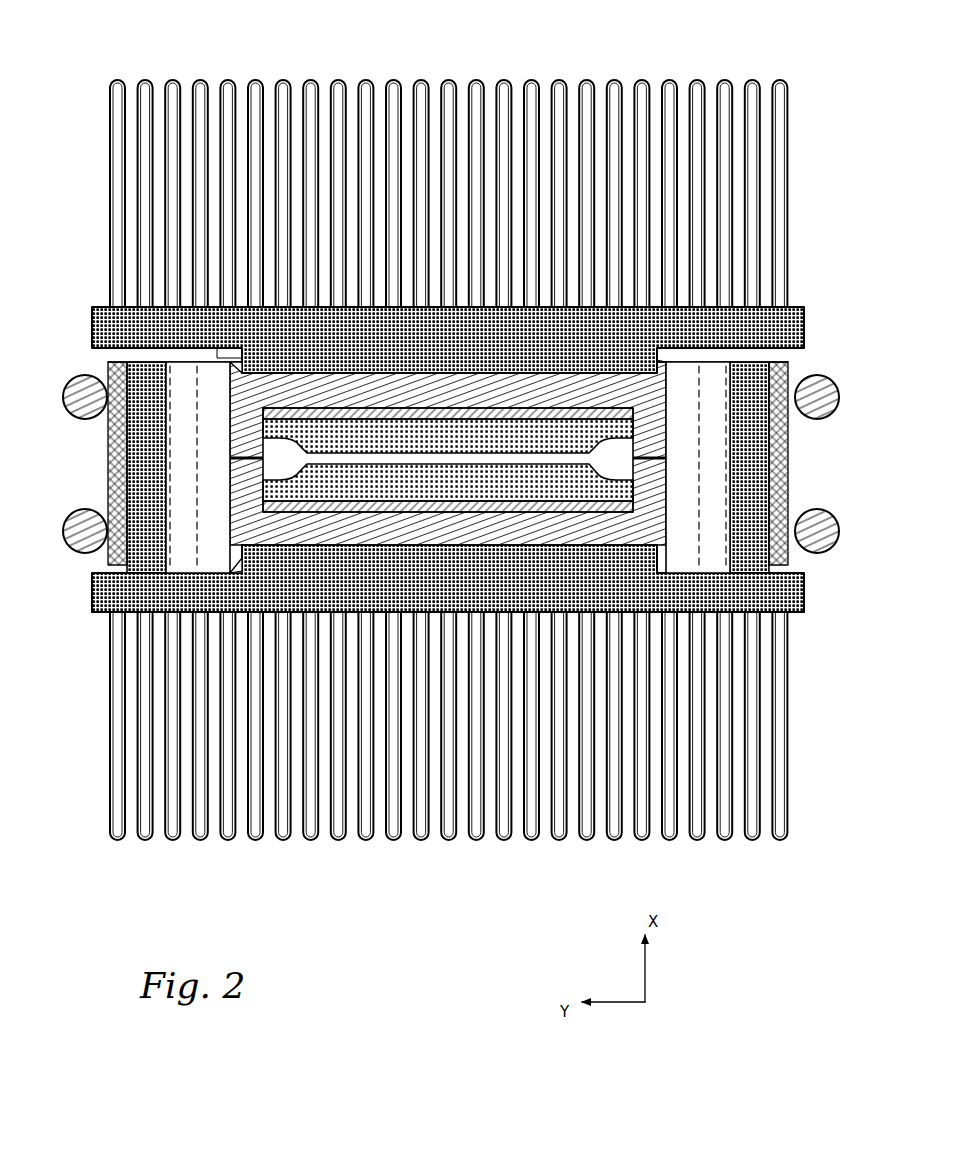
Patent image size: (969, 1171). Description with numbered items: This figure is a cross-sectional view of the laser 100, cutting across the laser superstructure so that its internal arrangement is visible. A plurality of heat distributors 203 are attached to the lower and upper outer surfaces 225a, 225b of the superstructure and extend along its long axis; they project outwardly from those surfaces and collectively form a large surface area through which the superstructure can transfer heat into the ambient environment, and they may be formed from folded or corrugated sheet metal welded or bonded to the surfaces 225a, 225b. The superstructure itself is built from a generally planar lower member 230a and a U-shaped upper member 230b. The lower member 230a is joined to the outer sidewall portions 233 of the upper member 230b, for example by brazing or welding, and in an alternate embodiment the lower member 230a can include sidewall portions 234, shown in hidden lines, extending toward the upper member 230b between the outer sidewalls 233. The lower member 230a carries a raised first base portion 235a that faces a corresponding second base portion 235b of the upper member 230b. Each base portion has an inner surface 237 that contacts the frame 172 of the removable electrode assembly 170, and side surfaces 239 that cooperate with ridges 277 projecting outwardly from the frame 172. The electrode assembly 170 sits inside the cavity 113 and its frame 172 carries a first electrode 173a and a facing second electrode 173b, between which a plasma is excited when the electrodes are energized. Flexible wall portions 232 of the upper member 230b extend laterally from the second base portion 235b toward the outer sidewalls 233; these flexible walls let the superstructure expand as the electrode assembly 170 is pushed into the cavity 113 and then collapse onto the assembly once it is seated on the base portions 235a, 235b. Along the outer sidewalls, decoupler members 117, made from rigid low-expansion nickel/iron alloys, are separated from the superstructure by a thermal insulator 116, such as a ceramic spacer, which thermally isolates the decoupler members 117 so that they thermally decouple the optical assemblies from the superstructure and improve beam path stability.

The laser 100 is at (200, 48).
The heat distributors 203 is at (345, 80).
The upper outer surface 225b is at (93, 307).
The lower outer surface 225a is at (795, 612).
The sidewall portions 234 is at (110, 618).
The thermal insulator 116 is at (120, 372).
The outer sidewall portions 233 is at (760, 440).
The upper member 230b is at (400, 385).
The lower member 230a is at (740, 585).
The inner surface 237 is at (440, 375).
The second base portion 235b is at (300, 375).
The first base portion 235a is at (300, 550).
The cavity 113 is at (687, 554).
The flexible wall portions 232 is at (217, 358).
The side surfaces 239 is at (245, 365).
The ridges 277 is at (650, 360).
The decoupler members 117 is at (105, 402).
The electrode assembly 170 is at (455, 540).
The frame 172 is at (495, 525).
The second electrode 173b is at (580, 440).
The first electrode 173a is at (580, 482).